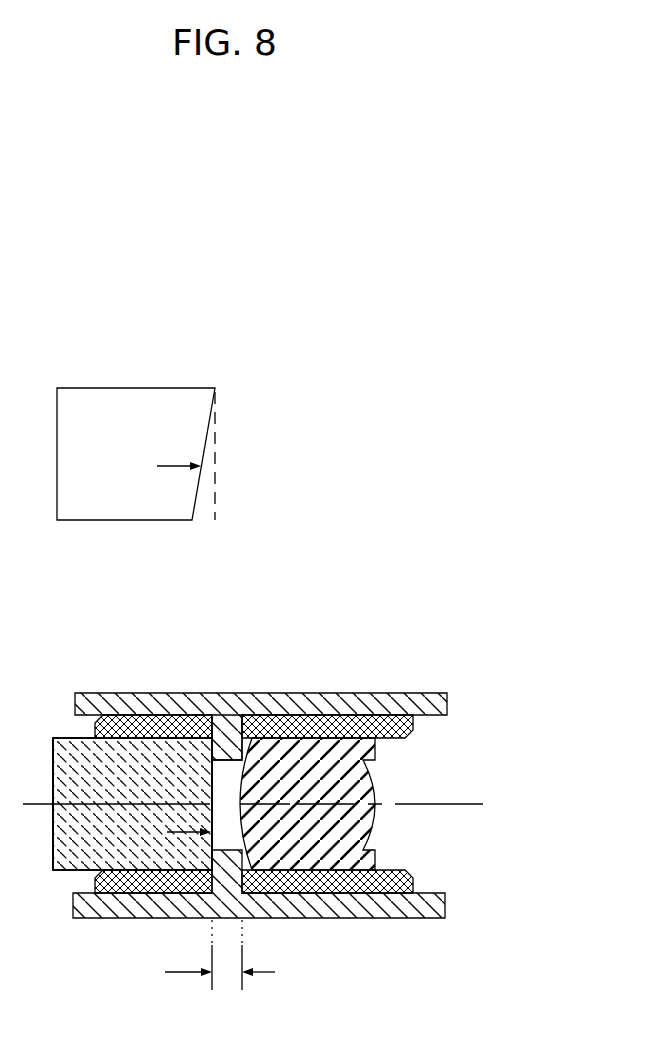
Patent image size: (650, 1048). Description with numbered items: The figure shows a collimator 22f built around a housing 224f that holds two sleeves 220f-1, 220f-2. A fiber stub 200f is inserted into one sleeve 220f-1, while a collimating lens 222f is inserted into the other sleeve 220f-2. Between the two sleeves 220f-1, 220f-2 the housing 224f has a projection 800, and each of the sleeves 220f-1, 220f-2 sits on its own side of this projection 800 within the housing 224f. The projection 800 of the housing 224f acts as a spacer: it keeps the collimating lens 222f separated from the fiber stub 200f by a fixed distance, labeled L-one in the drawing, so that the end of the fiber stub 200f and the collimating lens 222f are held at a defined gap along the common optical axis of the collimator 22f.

The collimator 22f is at (340, 390).
The fiber stub 200f is at (118, 752).
The sleeve 220f-1 is at (173, 722).
The sleeve 220f-2 is at (354, 722).
The projection 800 is at (232, 745).
The collimating lens 222f is at (328, 838).
The housing 224f is at (440, 909).